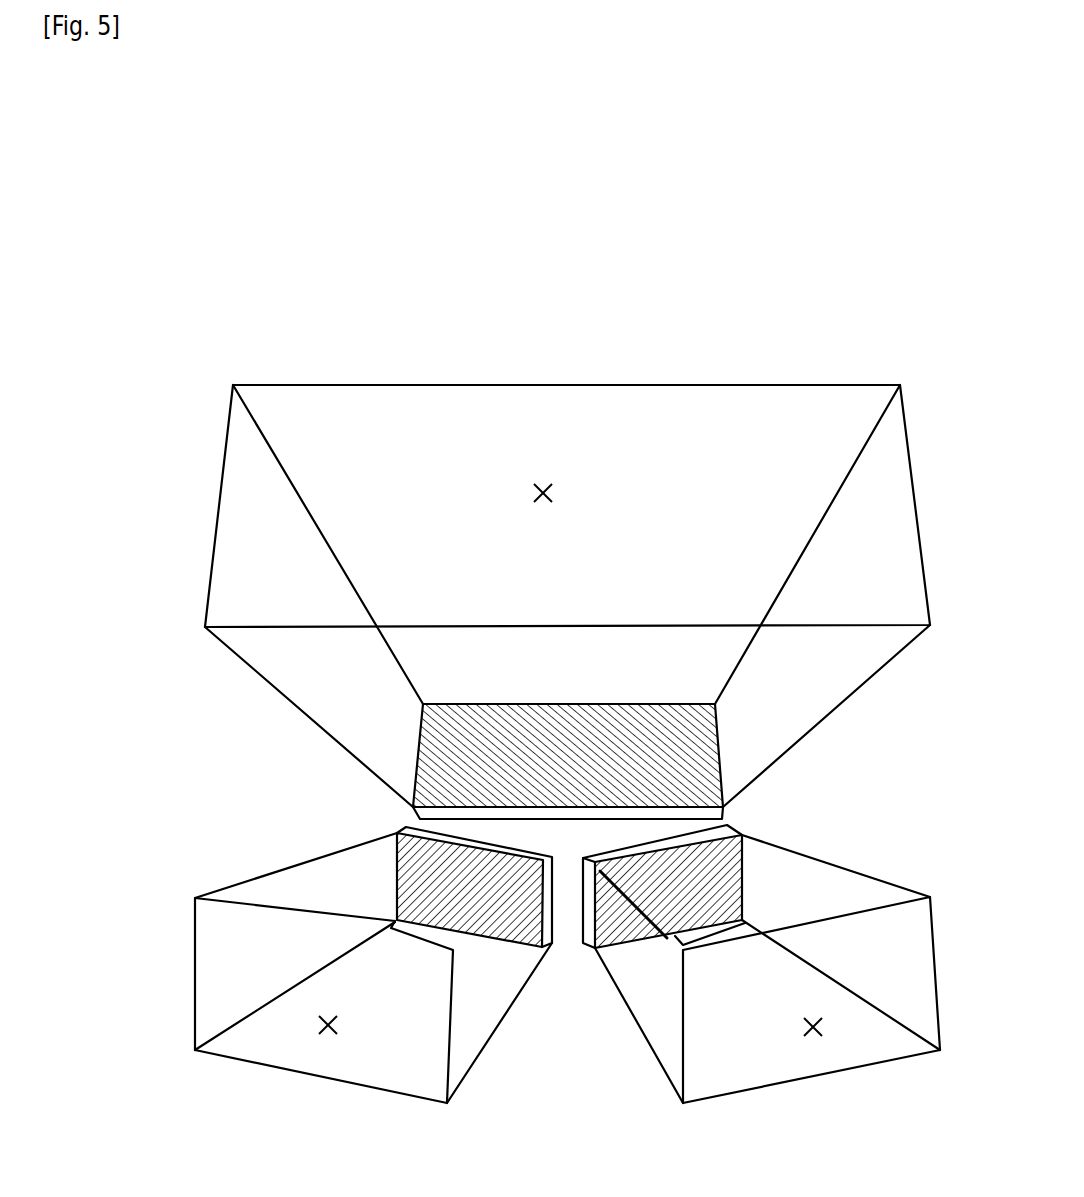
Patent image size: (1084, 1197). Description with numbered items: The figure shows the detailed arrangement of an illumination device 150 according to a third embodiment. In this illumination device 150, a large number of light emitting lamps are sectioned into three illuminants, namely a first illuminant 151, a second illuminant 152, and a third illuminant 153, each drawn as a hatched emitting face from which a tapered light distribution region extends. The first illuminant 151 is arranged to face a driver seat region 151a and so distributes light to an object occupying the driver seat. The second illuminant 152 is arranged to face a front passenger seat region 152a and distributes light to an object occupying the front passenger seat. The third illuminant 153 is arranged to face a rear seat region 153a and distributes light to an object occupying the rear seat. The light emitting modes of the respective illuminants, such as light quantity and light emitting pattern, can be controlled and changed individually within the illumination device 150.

The illumination device 150 is at (830, 755).
The first illuminant 151 is at (713, 855).
The driver seat region 151a is at (812, 1037).
The second illuminant 152 is at (413, 880).
The front passenger seat region 152a is at (323, 1037).
The third illuminant 153 is at (610, 745).
The rear seat region 153a is at (545, 483).